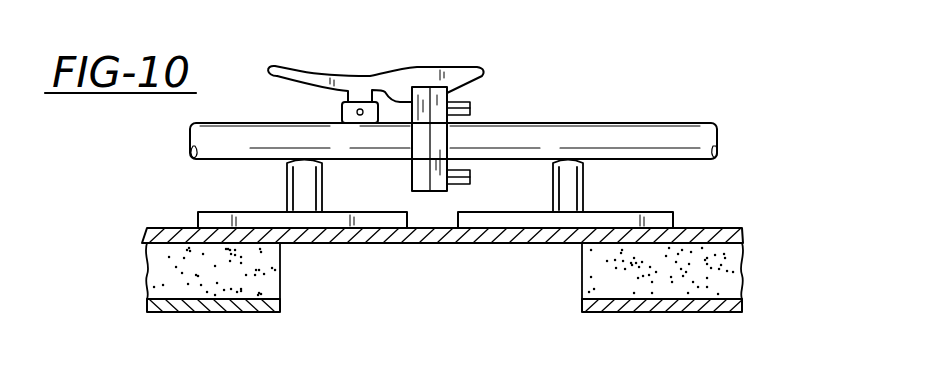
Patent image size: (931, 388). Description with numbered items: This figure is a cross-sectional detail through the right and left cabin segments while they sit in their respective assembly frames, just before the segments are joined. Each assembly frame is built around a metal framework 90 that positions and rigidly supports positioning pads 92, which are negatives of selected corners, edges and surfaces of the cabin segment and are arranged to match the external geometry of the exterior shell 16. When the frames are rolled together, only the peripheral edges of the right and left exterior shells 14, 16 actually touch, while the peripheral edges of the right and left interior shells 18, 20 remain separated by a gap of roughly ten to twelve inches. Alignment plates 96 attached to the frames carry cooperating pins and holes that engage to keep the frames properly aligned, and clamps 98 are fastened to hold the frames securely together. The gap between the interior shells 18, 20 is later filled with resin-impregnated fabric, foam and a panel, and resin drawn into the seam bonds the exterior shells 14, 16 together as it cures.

The right exterior shell 14 is at (158, 235).
The left exterior shell 16 is at (727, 236).
The right interior shell 18 is at (164, 306).
The left interior shell 20 is at (706, 302).
The metal framework 90 is at (690, 128).
The positioning pads 92 is at (660, 217).
The alignment plates 96 is at (408, 103).
The clamps 98 is at (424, 73).